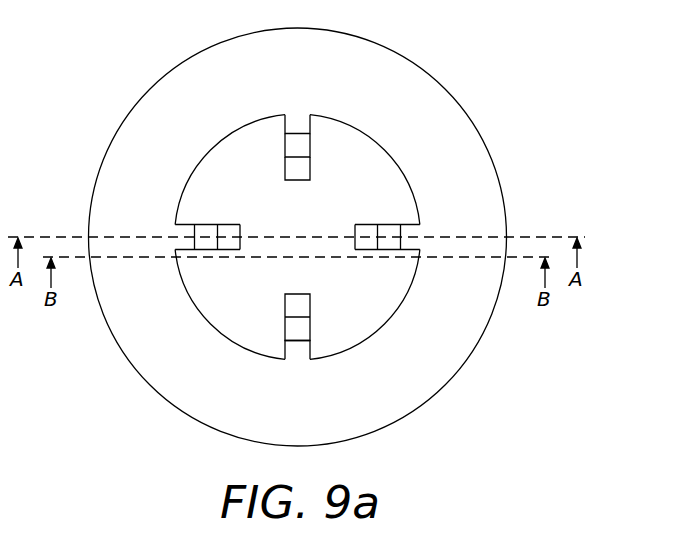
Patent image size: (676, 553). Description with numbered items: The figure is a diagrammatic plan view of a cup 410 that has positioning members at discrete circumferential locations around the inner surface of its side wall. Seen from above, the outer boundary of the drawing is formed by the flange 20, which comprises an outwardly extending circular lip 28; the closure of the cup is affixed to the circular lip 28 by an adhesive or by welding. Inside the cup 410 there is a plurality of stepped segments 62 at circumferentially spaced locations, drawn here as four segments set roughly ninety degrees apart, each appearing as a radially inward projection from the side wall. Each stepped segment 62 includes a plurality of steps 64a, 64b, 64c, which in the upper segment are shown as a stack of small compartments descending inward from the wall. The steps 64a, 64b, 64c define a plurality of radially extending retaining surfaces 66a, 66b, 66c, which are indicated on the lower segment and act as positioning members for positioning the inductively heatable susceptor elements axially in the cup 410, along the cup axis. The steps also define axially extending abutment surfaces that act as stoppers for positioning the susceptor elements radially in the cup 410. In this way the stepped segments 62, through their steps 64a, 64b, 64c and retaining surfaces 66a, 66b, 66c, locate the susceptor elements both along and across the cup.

The cup 410 is at (478, 68).
The flange 20 is at (148, 110).
The circular lip 28 is at (286, 237).
The stepped segment 62 is at (380, 214).
The step 64a is at (298, 171).
The step 64b is at (292, 151).
The step 64c is at (292, 127).
The radially extending retaining surface 66a is at (316, 304).
The radially extending retaining surface 66b is at (316, 332).
The radially extending retaining surface 66c is at (298, 357).